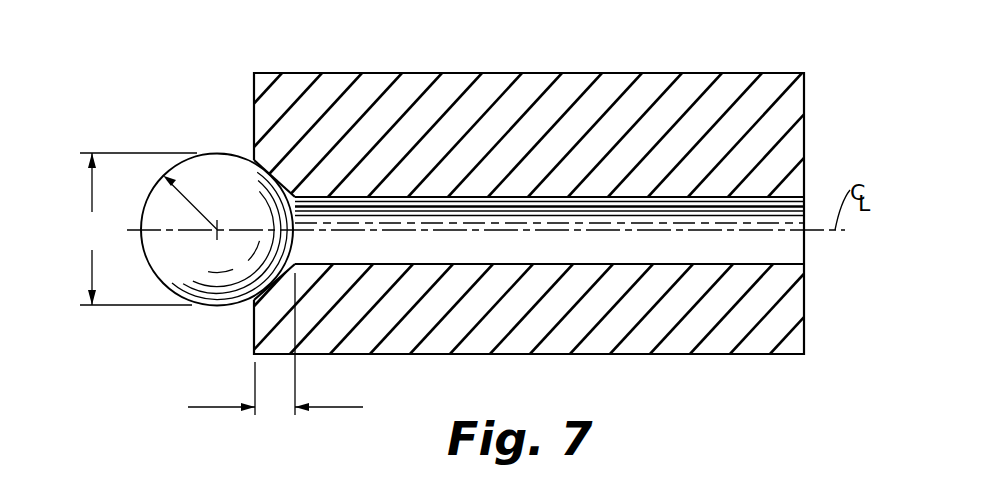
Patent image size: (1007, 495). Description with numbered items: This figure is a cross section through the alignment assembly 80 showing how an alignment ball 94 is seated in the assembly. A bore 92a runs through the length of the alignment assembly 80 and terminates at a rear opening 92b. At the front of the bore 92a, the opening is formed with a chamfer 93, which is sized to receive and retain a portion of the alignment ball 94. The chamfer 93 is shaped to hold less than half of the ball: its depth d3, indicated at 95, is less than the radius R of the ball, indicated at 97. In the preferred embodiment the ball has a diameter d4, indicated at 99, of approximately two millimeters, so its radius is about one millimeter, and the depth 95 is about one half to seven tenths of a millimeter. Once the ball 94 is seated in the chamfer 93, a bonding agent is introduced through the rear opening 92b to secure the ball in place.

The alignment assembly 80 is at (711, 44).
The bore 92a is at (780, 265).
The rear opening 92b is at (806, 249).
The chamfer 93 is at (258, 172).
The alignment ball 94 is at (213, 307).
The depth d3 95 is at (208, 410).
The radius R 97 is at (193, 205).
The diameter d4 99 is at (91, 205).